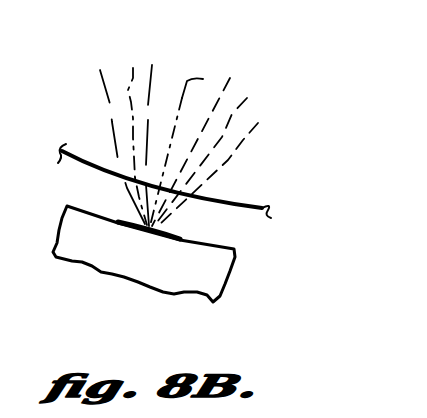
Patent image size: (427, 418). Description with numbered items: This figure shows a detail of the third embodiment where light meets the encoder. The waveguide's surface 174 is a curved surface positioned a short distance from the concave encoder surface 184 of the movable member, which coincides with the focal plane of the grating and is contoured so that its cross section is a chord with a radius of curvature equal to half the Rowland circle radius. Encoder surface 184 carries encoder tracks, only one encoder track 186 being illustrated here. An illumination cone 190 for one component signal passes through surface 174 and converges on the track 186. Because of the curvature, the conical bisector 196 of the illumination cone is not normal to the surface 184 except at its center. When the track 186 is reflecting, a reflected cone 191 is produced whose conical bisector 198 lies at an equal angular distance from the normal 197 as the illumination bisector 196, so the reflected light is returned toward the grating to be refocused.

The surface 174 is at (246, 206).
The concave encoder surface 184 is at (236, 248).
The encoder track 186 is at (122, 215).
The illumination cone 190 is at (104, 77).
The reflected cone 191 is at (258, 123).
The conical bisector of the illumination cone 196 is at (137, 56).
The normal 197 is at (218, 77).
The conical bisector of the reflected cone 198 is at (247, 98).